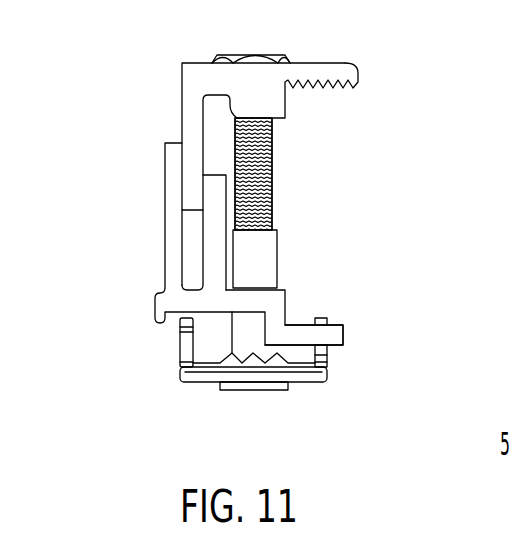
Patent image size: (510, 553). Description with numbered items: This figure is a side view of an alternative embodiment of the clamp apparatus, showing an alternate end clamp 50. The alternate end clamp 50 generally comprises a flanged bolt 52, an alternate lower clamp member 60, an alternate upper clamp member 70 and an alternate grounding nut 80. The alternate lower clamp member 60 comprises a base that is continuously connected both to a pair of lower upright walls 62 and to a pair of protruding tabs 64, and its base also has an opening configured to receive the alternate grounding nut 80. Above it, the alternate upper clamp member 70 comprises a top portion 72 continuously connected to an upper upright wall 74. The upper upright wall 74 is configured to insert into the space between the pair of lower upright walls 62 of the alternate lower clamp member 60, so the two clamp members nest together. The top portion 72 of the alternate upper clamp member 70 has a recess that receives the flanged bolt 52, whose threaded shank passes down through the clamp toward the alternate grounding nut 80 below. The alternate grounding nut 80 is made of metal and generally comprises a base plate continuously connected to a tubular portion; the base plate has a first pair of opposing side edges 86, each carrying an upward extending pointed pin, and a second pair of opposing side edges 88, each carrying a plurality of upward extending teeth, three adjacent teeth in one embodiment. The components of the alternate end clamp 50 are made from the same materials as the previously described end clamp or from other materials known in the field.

The alternate end clamp 50 is at (100, 333).
The flanged bolt 52 is at (272, 180).
The alternate lower clamp member 60 is at (147, 272).
The lower upright walls 62 is at (212, 248).
The protruding tabs 64 is at (337, 332).
The alternate upper clamp member 70 is at (167, 83).
The top portion 72 is at (282, 75).
The upper upright wall 74 is at (192, 105).
The alternate grounding nut 80 is at (298, 395).
The first pair of opposing side edges 86 is at (187, 375).
The second pair of opposing side edges 88 is at (248, 375).